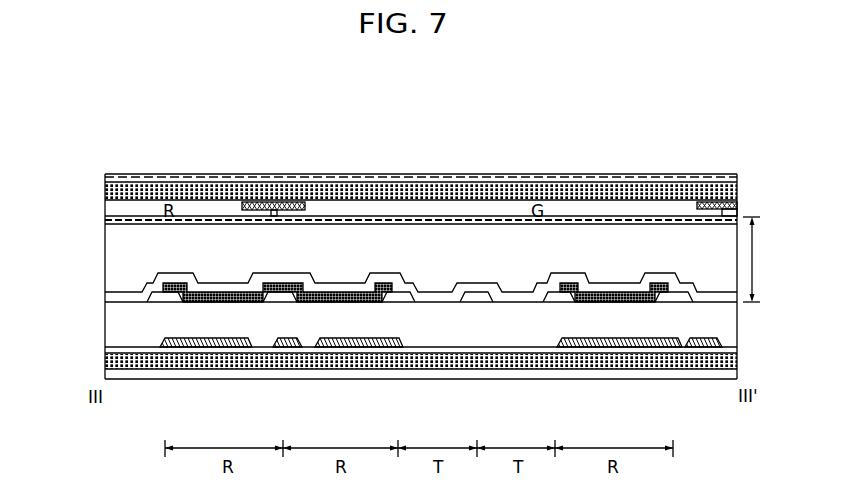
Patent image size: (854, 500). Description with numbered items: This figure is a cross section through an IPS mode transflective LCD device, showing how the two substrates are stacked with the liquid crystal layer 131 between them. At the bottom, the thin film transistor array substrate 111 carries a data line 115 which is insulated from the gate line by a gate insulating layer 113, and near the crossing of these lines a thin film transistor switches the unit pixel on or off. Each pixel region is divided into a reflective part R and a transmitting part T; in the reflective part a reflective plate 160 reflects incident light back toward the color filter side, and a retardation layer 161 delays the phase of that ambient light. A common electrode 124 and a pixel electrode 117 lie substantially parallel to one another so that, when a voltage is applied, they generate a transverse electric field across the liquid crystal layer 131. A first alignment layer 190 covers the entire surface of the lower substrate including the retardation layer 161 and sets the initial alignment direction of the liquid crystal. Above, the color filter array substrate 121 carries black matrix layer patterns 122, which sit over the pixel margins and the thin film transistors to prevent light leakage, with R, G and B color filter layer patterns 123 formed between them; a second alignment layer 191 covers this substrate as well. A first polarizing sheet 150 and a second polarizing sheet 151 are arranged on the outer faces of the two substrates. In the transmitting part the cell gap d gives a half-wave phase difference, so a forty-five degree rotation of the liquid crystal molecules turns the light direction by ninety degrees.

The thin film transistor array substrate 111 is at (518, 362).
The gate insulating layer 113 is at (366, 348).
The data line 115 is at (288, 348).
The pixel electrode 117 is at (157, 298).
The color filter array substrate 121 is at (213, 193).
The black matrix layer pattern 122 is at (295, 211).
The color filter layer pattern 123 is at (110, 215).
The common electrode 124 is at (278, 298).
The liquid crystal layer 131 is at (732, 279).
The first polarizing sheet 150 is at (730, 373).
The second polarizing sheet 151 is at (117, 178).
The reflective plate 160 is at (632, 400).
The retardation layer 161 is at (613, 290).
The first alignment layer 190 is at (107, 297).
The second alignment layer 191 is at (108, 225).